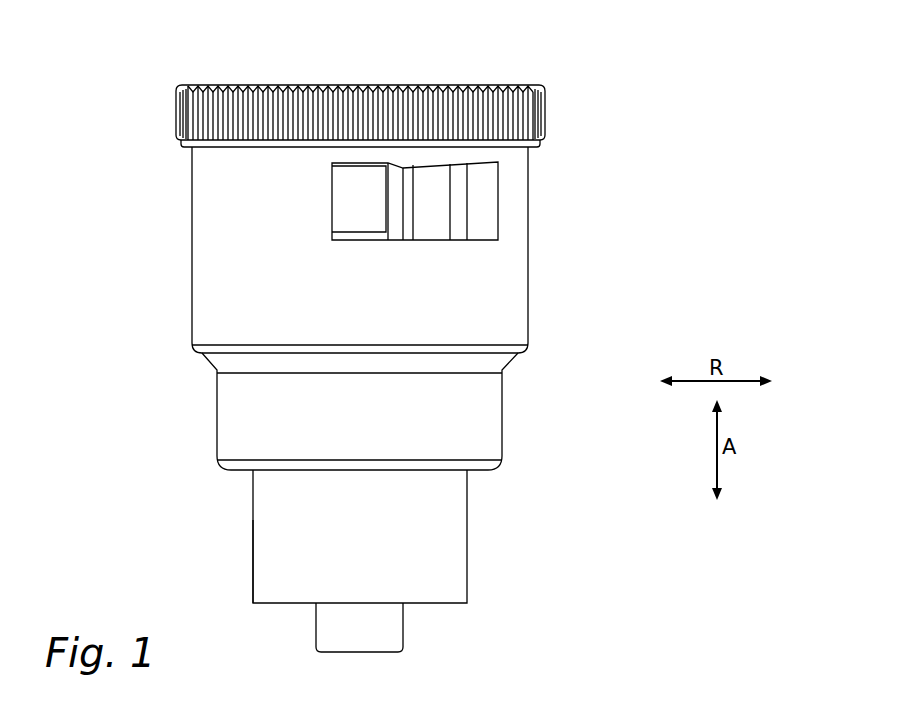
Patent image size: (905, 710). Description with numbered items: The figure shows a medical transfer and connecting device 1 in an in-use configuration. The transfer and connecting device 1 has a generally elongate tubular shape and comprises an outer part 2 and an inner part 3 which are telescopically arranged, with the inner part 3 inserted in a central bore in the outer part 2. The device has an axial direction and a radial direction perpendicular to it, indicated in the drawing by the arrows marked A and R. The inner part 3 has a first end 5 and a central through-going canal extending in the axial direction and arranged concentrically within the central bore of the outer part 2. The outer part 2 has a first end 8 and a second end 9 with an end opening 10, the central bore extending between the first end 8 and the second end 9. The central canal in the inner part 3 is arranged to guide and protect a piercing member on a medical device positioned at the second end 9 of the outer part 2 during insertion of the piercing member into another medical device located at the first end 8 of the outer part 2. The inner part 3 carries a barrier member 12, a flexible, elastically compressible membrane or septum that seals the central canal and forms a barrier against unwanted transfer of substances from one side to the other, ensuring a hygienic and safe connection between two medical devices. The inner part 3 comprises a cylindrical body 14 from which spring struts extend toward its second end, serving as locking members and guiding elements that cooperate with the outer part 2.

The transfer and connecting device 1 is at (668, 43).
The outer part 2 is at (481, 288).
The inner part 3 is at (413, 561).
The first end 5 is at (378, 652).
The first end 8 is at (245, 471).
The second end 9 is at (490, 85).
The end opening 10 is at (433, 79).
The barrier member 12 is at (378, 236).
The cylindrical body 14 is at (277, 554).